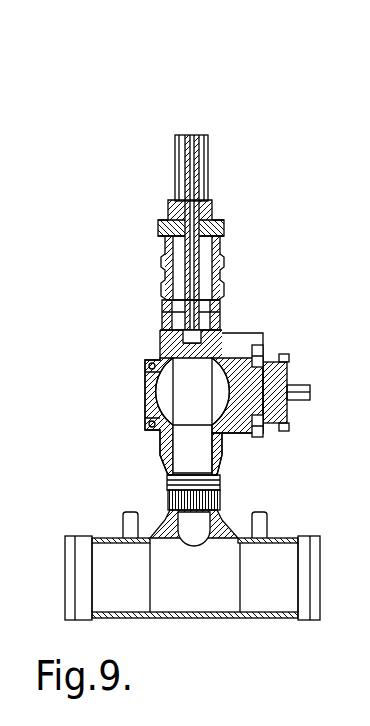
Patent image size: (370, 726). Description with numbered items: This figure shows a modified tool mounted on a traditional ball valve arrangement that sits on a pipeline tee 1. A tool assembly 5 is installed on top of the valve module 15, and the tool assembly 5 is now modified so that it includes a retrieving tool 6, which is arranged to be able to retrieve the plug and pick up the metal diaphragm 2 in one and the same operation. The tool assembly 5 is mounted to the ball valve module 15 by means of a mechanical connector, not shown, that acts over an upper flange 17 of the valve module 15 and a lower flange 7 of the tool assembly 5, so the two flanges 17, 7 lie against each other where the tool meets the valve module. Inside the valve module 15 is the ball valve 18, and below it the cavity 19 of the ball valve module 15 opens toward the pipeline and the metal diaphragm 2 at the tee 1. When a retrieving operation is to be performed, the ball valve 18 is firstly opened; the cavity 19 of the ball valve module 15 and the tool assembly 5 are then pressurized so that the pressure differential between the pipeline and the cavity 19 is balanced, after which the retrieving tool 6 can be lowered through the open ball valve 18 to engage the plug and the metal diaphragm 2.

The tee pipe fitting 1 is at (292, 533).
The metal diaphragm 2 is at (193, 527).
The tool assembly 5 is at (203, 130).
The retrieving tool 6 is at (173, 332).
The lower flange 7 is at (157, 227).
The valve module 15 is at (260, 332).
The upper flange 17 is at (223, 230).
The ball valve 18 is at (155, 388).
The cavity 19 is at (188, 442).